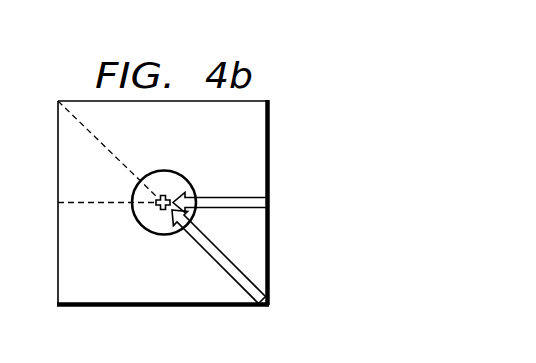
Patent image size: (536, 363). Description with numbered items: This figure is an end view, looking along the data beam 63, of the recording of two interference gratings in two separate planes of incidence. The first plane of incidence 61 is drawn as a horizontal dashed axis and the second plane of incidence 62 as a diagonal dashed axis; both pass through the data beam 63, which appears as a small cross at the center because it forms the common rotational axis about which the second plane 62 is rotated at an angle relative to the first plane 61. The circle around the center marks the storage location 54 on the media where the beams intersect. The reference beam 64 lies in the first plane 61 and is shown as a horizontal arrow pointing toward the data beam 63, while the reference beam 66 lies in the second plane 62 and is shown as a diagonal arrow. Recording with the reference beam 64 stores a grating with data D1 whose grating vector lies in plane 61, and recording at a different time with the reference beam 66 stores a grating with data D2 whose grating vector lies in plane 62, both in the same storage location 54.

The storage location 54 is at (134, 222).
The plane of incidence 61 is at (70, 203).
The plane of incidence 62 is at (70, 96).
The data beam 63 is at (166, 194).
The reference beam 64 is at (228, 197).
The reference beam 66 is at (216, 250).